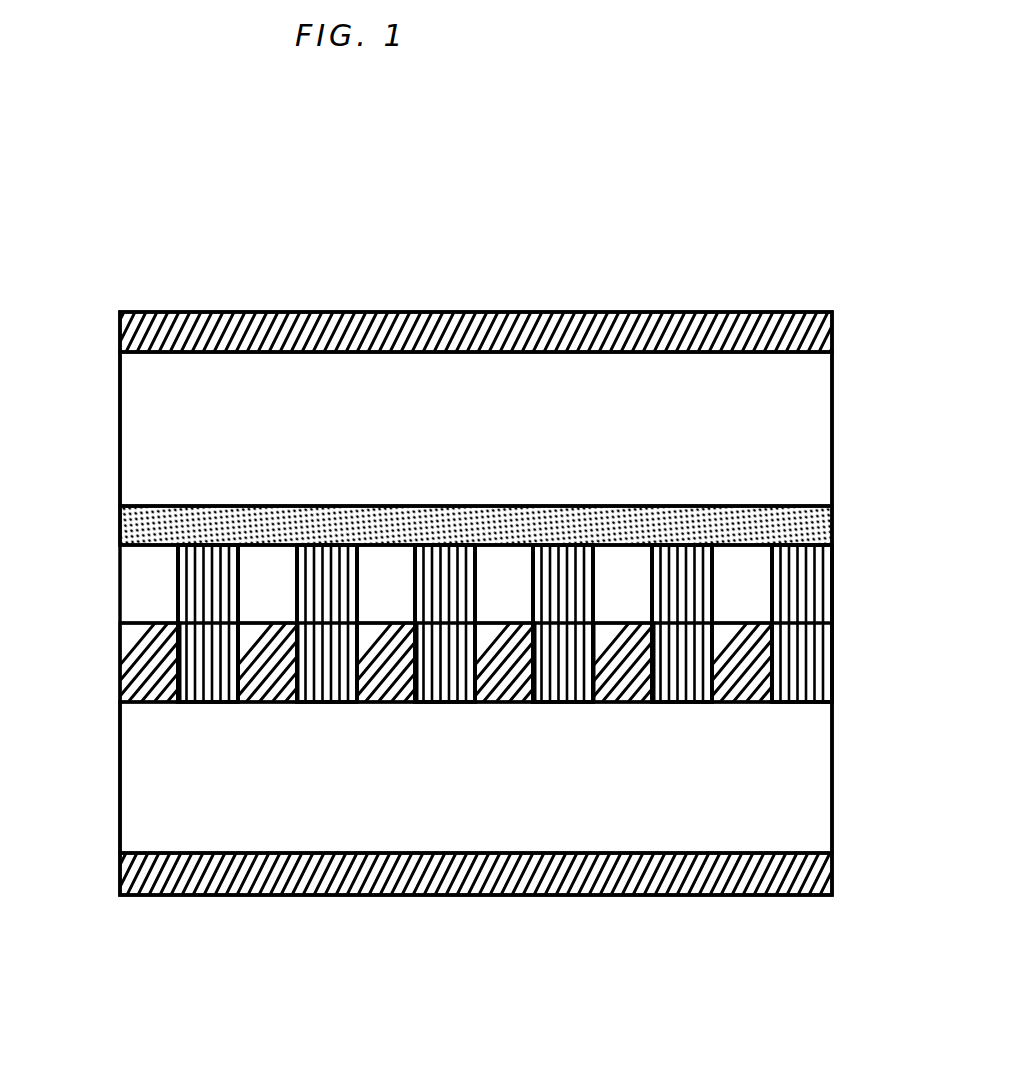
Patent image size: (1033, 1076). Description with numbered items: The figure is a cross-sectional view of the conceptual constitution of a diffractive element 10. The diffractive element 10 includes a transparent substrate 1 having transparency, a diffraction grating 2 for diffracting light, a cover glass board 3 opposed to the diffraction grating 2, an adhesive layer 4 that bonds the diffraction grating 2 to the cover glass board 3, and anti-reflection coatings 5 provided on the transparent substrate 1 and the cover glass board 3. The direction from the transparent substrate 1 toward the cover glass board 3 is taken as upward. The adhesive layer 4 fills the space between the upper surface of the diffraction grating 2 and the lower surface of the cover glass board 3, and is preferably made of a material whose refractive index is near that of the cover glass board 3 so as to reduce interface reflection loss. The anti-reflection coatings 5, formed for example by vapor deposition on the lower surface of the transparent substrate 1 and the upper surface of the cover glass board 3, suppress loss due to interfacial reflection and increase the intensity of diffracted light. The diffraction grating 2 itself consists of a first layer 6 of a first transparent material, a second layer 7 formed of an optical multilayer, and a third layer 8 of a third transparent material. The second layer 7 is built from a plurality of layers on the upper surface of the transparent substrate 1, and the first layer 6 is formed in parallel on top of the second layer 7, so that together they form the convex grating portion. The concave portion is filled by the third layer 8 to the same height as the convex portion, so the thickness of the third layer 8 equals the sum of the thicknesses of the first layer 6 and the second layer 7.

The diffractive element 10 is at (698, 131).
The transparent substrate 1 is at (119, 778).
The diffraction grating 2 is at (110, 546).
The cover glass board 3 is at (119, 425).
The adhesive layer 4 is at (119, 525).
The anti-reflection coating 5 is at (119, 332).
The first layer 6 is at (758, 583).
The second layer 7 is at (752, 660).
The third layer 8 is at (805, 622).